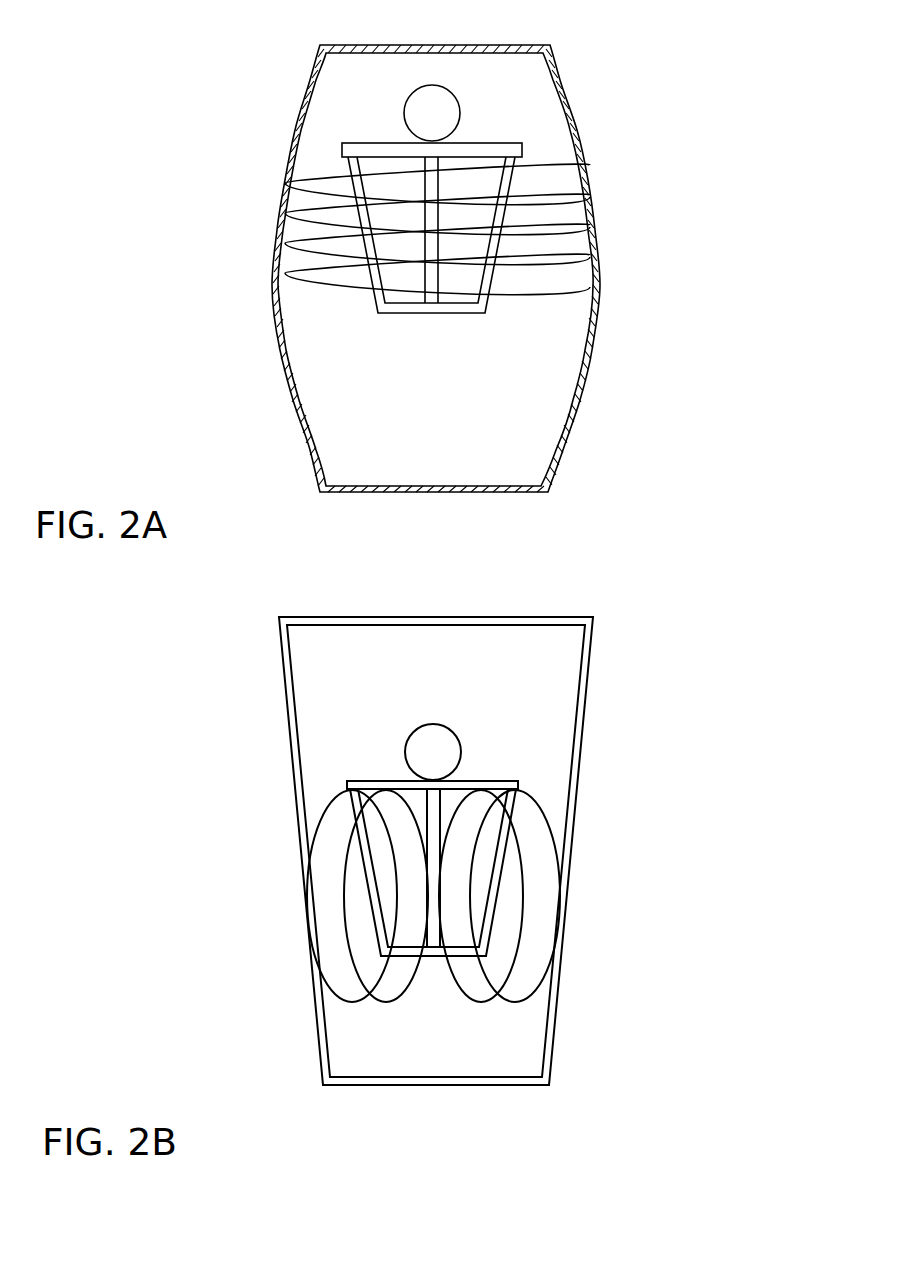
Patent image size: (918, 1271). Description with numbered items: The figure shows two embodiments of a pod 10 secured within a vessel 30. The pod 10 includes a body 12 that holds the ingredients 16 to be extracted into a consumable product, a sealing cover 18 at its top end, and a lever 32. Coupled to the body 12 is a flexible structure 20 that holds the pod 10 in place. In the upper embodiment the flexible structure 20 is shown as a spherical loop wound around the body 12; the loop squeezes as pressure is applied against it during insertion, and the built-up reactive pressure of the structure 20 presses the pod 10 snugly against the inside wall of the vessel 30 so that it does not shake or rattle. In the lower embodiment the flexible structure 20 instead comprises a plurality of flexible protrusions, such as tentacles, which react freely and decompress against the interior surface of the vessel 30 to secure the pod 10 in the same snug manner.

In FIG. 2A, the pod 10 is at (380, 312).
In FIG. 2B, the pod 10 is at (498, 872).
In FIG. 2A, the body 12 is at (358, 258).
In FIG. 2A, the ingredients 16 is at (387, 223).
In FIG. 2A, the sealing cover 18 is at (351, 152).
In FIG. 2B, the sealing cover 18 is at (518, 783).
In FIG. 2A, the flexible structure 20 is at (568, 201).
In FIG. 2B, the flexible structure 20 is at (530, 832).
In FIG. 2A, the vessel 30 is at (569, 101).
In FIG. 2B, the vessel 30 is at (593, 642).
In FIG. 2A, the lever 32 is at (409, 118).
In FIG. 2B, the lever 32 is at (462, 750).